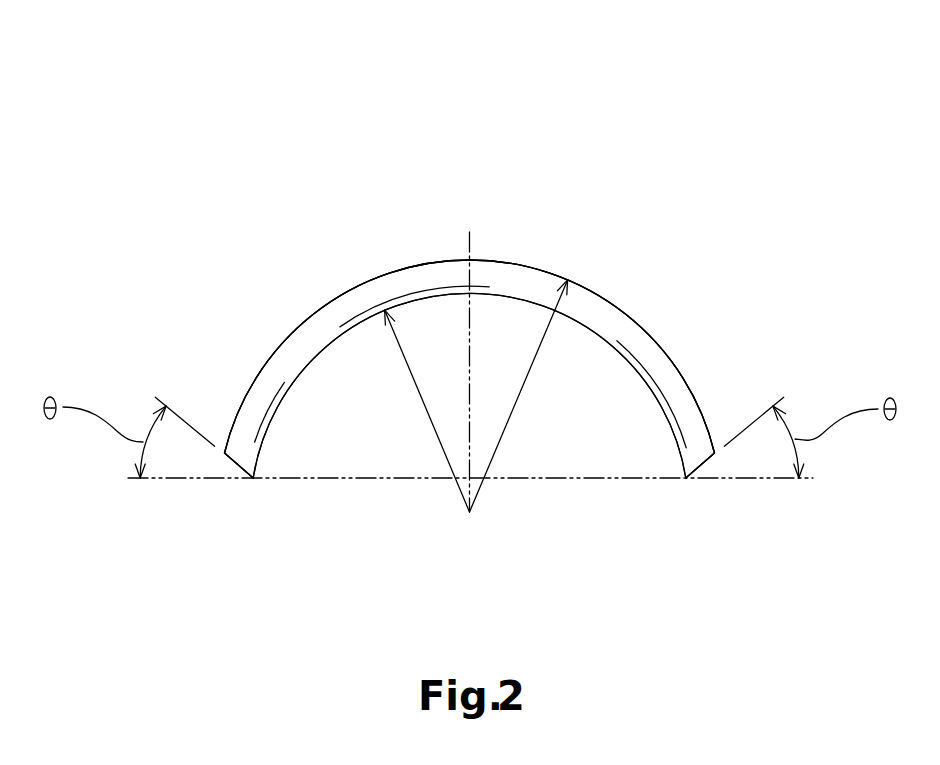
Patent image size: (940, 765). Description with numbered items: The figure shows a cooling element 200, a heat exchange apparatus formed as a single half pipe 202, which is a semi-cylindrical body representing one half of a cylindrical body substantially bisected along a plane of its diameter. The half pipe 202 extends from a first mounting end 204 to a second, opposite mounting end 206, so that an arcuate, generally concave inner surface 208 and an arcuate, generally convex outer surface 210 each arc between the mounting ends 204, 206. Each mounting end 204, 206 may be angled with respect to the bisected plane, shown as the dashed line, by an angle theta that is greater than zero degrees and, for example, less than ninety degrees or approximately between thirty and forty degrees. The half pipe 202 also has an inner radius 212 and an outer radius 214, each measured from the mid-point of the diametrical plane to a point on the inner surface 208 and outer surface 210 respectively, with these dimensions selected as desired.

The cooling element 200 is at (576, 146).
The half pipe 202 is at (637, 319).
The first mounting end 204 is at (253, 478).
The second mounting end 206 is at (686, 478).
The inner surface 208 is at (295, 392).
The outer surface 210 is at (277, 336).
The inner radius 212 is at (444, 450).
The outer radius 214 is at (506, 425).